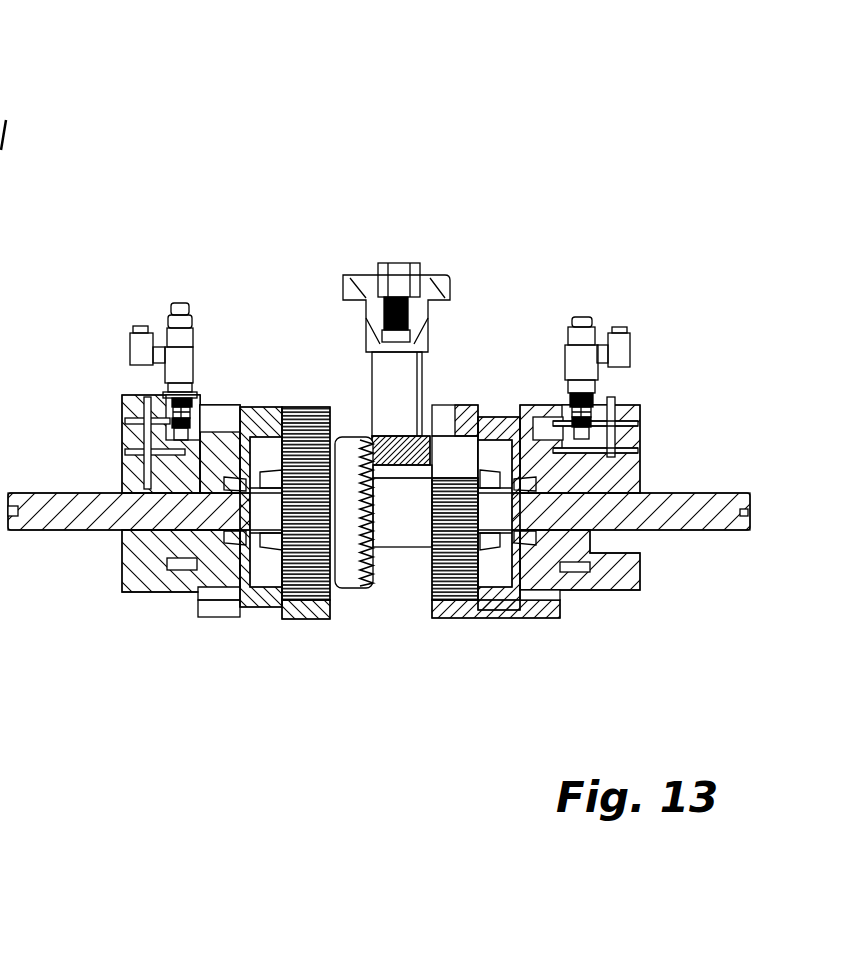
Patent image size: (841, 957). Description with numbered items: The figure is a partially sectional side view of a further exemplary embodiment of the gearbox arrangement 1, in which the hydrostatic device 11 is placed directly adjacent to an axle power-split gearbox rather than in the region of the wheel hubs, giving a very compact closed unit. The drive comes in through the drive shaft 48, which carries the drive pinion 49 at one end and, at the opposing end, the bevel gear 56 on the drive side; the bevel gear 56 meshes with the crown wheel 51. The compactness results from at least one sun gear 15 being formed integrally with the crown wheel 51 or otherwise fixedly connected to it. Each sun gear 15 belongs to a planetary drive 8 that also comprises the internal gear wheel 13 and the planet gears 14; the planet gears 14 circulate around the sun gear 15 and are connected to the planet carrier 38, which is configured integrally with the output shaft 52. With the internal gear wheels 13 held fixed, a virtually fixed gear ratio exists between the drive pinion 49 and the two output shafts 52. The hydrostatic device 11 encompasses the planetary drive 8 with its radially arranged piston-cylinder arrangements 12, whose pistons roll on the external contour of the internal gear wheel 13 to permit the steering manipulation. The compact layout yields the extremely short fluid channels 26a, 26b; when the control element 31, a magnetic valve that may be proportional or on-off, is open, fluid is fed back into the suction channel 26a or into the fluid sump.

The gearbox arrangement 1 is at (503, 160).
The planetary drive 8 is at (212, 660).
The hydrostatic device 11 is at (388, 240).
The piston-cylinder arrangement 12 is at (260, 272).
The internal gear wheel 13 is at (217, 608).
The planet gear 14 is at (287, 410).
The sun gear 15 is at (328, 540).
The suction channel 26a is at (577, 440).
The fluid channel 26b is at (585, 450).
The control element 31 is at (178, 398).
The planet carrier 38 is at (177, 393).
The drive shaft 48 is at (392, 393).
The drive pinion 49 is at (452, 280).
The crown wheel 51 is at (348, 447).
The output shaft 52 is at (100, 503).
The bevel gear 56 is at (387, 434).